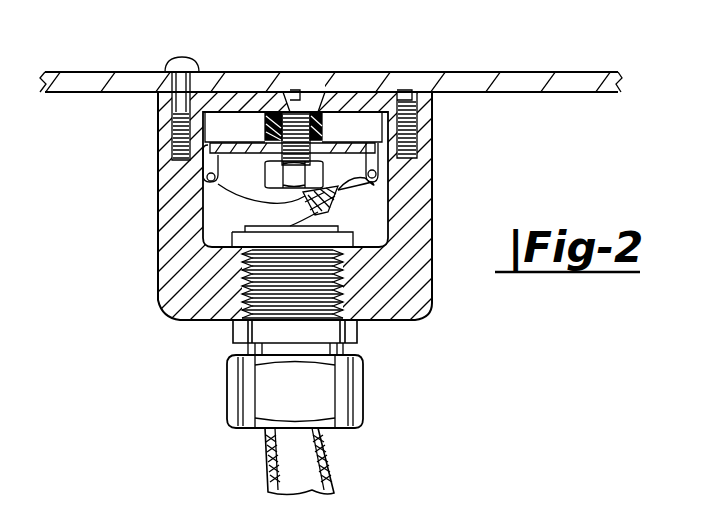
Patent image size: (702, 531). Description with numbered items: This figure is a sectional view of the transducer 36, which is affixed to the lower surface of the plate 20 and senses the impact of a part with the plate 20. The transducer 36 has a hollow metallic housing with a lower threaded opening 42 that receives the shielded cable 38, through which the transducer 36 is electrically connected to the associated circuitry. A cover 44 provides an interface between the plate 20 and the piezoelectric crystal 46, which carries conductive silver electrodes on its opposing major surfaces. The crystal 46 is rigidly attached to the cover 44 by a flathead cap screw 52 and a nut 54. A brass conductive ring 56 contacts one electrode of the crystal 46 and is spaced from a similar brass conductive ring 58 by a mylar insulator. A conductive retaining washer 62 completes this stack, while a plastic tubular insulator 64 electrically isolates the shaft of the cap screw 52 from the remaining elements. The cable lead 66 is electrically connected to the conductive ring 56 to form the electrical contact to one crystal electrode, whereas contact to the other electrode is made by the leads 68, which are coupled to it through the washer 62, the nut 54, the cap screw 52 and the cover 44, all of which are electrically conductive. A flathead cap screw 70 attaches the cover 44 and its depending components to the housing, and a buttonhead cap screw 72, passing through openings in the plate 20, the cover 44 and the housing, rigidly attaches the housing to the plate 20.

The plate 20 is at (540, 77).
The transducer 36 is at (130, 251).
The shielded cable 38 is at (318, 450).
The lower threaded opening 42 is at (258, 292).
The cover 44 is at (158, 100).
The piezoelectric crystal 46 is at (347, 117).
The flathead cap screw 52 is at (308, 84).
The nut 54 is at (268, 173).
The brass conductive ring 56 is at (373, 160).
The brass conductive ring 58 is at (200, 160).
The conductive retaining washer 62 is at (362, 184).
The plastic tubular insulator 64 is at (270, 118).
The cable lead 66 is at (336, 198).
The leads 68 is at (246, 198).
The flathead cap screw 70 is at (395, 145).
The buttonhead cap screw 72 is at (185, 57).